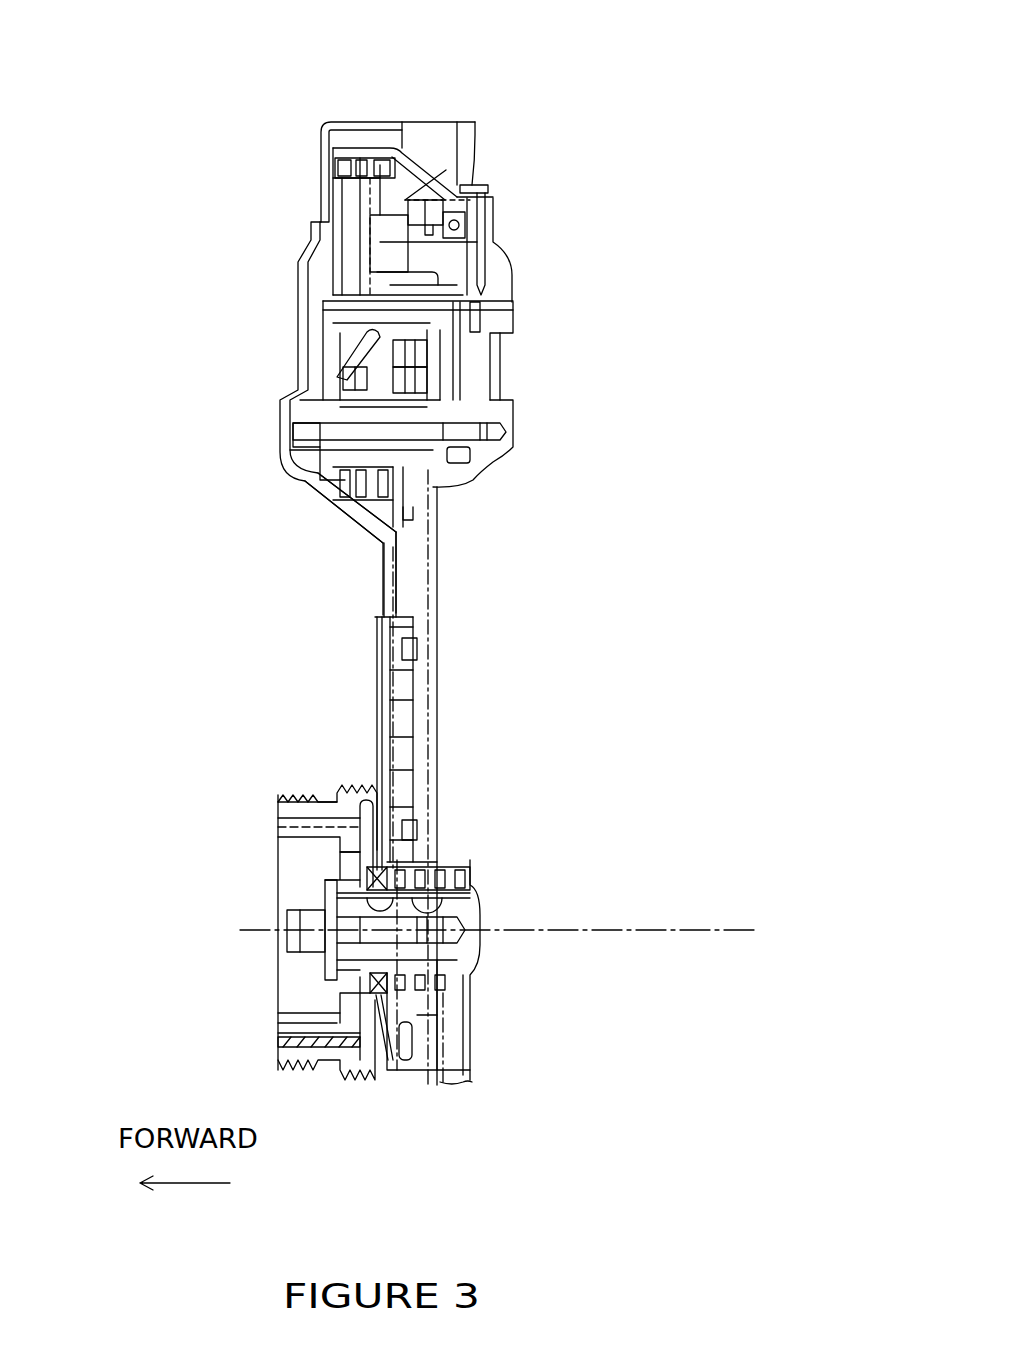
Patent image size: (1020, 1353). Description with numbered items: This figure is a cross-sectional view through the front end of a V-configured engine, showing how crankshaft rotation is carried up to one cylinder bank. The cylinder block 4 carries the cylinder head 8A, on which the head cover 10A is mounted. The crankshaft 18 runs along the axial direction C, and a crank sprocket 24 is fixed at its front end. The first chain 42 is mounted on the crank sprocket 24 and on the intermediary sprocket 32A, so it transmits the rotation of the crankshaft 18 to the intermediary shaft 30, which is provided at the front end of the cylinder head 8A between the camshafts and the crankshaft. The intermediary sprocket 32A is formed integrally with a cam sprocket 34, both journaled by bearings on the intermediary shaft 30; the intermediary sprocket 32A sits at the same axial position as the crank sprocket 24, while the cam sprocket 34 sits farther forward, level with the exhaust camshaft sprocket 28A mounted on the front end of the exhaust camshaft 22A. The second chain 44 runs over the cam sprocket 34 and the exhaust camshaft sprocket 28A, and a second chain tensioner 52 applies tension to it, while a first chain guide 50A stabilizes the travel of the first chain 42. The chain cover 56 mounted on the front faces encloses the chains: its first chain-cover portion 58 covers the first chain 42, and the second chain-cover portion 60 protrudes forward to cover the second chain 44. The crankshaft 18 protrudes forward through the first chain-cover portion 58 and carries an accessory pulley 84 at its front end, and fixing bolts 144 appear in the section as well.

The head cover 10A is at (388, 118).
The exhaust camshaft sprocket 28A is at (335, 182).
The exhaust camshaft 22A is at (447, 175).
The second chain 44 is at (327, 222).
The second chain-cover portion 60 is at (297, 310).
The second chain tensioner 52 is at (326, 340).
The cam sprocket 34 is at (334, 372).
The cylinder head 8A is at (470, 355).
The intermediary shaft 30 is at (310, 433).
The cylinder block 4 is at (457, 489).
The intermediary sprocket 32A is at (393, 513).
The fixing bolts 144 is at (383, 585).
The first chain 42 is at (417, 582).
The chain cover 56 is at (368, 695).
The first chain guide 50A is at (405, 716).
The first chain-cover portion 58 is at (380, 748).
The accessory pulley 84 is at (282, 810).
The crank sprocket 24 is at (413, 872).
The crankshaft 18 is at (468, 948).
The axial direction C is at (680, 930).